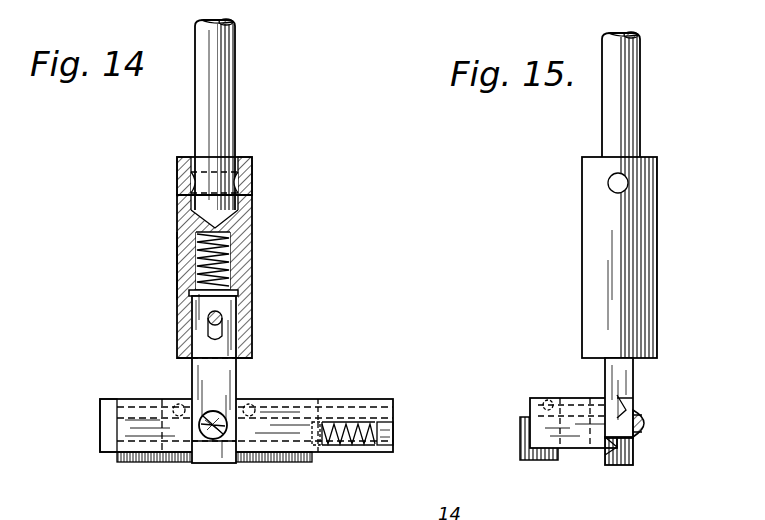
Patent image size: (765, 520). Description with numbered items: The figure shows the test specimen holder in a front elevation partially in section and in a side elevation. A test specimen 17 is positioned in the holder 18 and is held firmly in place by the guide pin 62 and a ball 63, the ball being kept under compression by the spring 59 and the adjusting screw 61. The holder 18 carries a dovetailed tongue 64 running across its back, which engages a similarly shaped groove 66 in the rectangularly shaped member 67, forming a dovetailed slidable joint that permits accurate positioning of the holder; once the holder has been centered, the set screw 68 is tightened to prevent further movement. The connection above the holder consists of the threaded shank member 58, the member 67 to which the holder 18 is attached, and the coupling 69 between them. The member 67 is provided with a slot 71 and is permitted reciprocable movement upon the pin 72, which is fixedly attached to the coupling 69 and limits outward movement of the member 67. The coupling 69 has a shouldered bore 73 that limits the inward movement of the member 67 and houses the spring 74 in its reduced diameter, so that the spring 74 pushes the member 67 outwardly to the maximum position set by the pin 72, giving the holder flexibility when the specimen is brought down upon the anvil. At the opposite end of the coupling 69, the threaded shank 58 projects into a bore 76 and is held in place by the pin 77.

In FIG. 14, the test specimen 17 is at (300, 462).
In FIG. 15, the test specimen 17 is at (542, 462).
In FIG. 14, the holder 18 is at (393, 440).
In FIG. 15, the holder 18 is at (530, 405).
In FIG. 14, the shank member 58 is at (233, 98).
In FIG. 15, the shank member 58 is at (640, 100).
In FIG. 14, the spring 59 is at (350, 424).
In FIG. 14, the adjusting screw 61 is at (393, 418).
In FIG. 14, the guide pin 62 is at (176, 404).
In FIG. 15, the guide pin 62 is at (548, 400).
In FIG. 14, the ball 63 is at (320, 420).
In FIG. 14, the dovetailed tongue 64 is at (185, 444).
In FIG. 15, the dovetailed tongue 64 is at (619, 467).
In FIG. 15, the groove 66 is at (622, 410).
In FIG. 14, the rectangularly shaped member 67 is at (236, 374).
In FIG. 15, the rectangularly shaped member 67 is at (607, 380).
In FIG. 14, the set screw 68 is at (228, 432).
In FIG. 15, the set screw 68 is at (652, 430).
In FIG. 14, the coupling 69 is at (252, 250).
In FIG. 15, the coupling 69 is at (648, 250).
In FIG. 14, the slot 71 is at (208, 334).
In FIG. 14, the pin 72 is at (222, 318).
In FIG. 14, the shouldered bore 73 is at (177, 276).
In FIG. 14, the spring 74 is at (222, 268).
In FIG. 14, the bore 76 is at (252, 164).
In FIG. 14, the pin 77 is at (252, 184).
In FIG. 15, the pin 77 is at (628, 183).